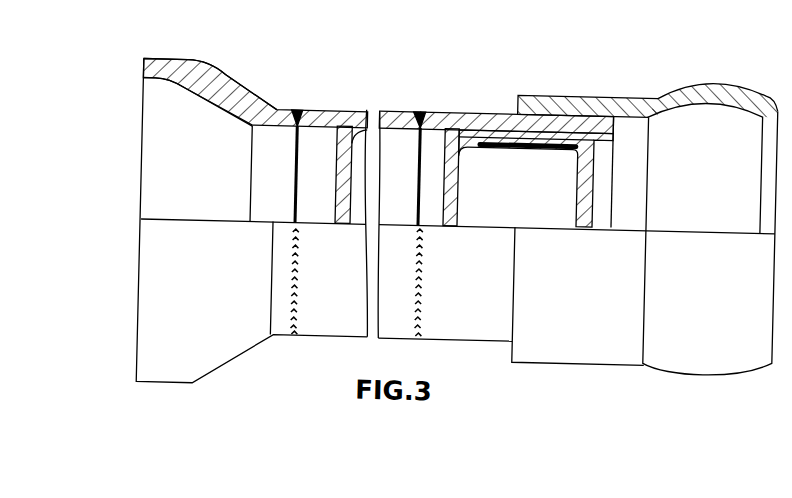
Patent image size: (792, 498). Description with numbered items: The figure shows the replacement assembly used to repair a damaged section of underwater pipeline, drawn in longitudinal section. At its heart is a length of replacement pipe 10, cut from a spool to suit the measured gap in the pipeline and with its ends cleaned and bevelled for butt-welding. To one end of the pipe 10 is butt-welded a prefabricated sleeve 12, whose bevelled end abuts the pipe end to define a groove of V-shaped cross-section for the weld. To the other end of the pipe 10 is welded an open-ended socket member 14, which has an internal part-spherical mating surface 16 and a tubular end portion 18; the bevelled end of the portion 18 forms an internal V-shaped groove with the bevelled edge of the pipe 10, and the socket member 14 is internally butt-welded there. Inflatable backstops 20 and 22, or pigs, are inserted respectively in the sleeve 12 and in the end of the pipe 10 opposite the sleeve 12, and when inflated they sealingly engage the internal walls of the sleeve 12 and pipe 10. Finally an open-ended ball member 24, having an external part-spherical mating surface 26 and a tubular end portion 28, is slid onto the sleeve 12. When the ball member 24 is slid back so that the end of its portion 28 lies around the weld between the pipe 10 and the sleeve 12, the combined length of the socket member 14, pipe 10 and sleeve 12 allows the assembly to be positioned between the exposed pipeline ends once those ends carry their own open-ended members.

The replacement pipe 10 is at (394, 112).
The sleeve 12 is at (454, 115).
The socket member 14 is at (240, 93).
The internal part-spherical mating surface 16 is at (195, 96).
The tubular end portion 18 is at (281, 112).
The inflatable backstop 20 is at (348, 133).
The inflatable backstop 22 is at (583, 142).
The ball member 24 is at (664, 90).
The external part-spherical mating surface 26 is at (712, 81).
The tubular end portion 28 is at (537, 95).